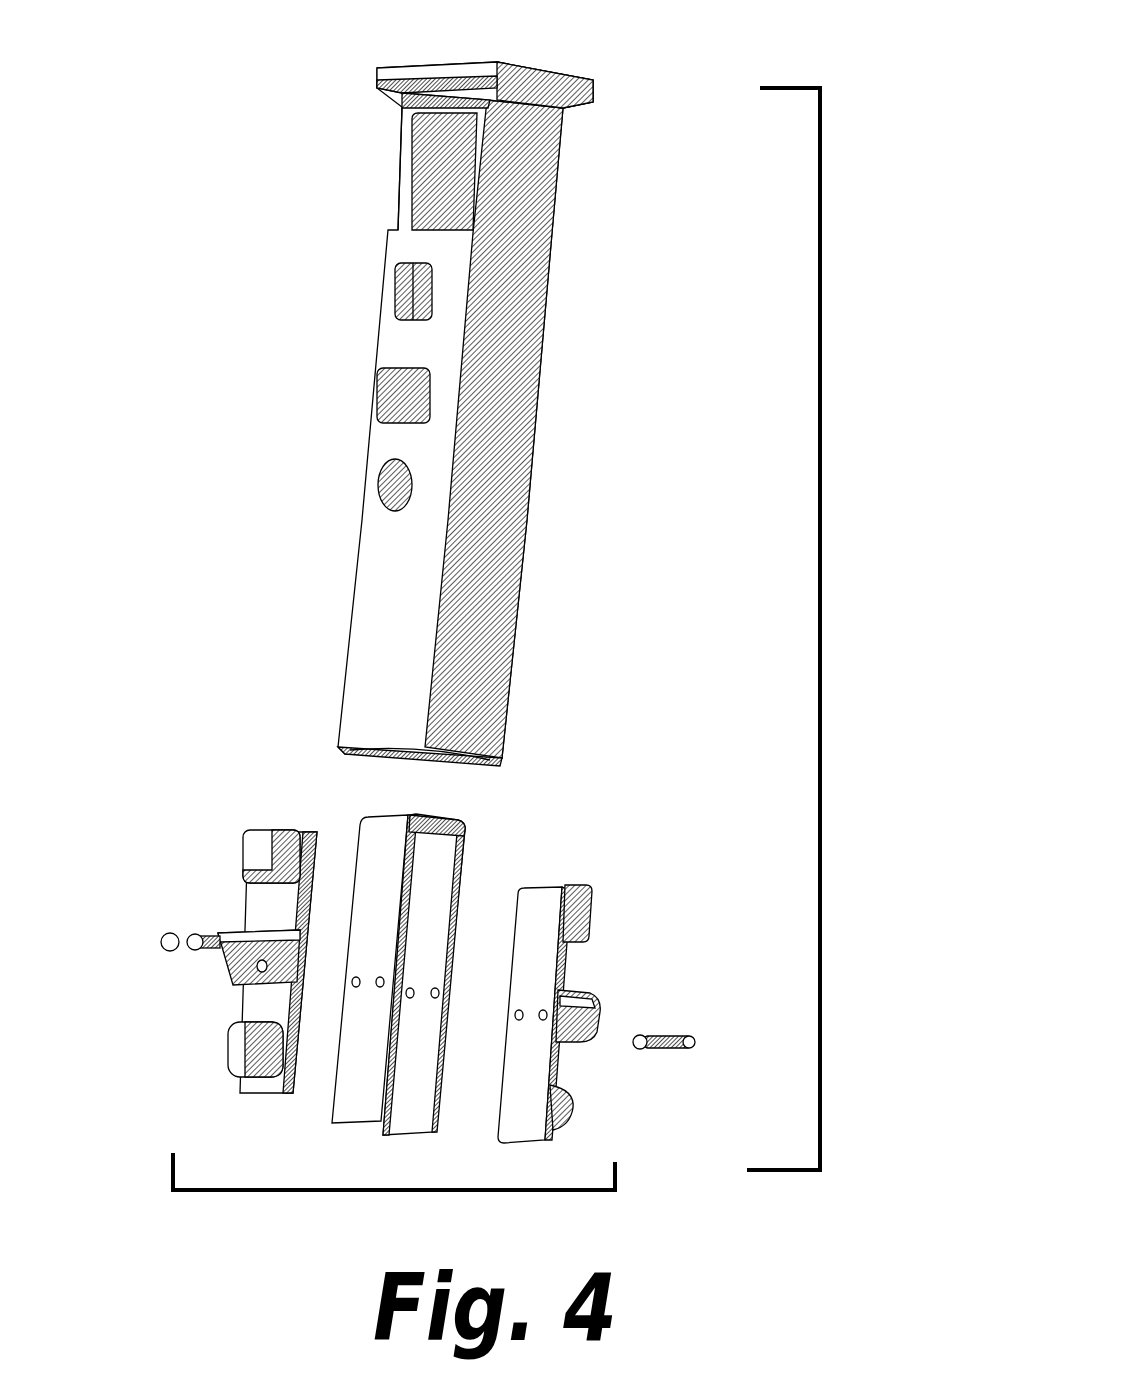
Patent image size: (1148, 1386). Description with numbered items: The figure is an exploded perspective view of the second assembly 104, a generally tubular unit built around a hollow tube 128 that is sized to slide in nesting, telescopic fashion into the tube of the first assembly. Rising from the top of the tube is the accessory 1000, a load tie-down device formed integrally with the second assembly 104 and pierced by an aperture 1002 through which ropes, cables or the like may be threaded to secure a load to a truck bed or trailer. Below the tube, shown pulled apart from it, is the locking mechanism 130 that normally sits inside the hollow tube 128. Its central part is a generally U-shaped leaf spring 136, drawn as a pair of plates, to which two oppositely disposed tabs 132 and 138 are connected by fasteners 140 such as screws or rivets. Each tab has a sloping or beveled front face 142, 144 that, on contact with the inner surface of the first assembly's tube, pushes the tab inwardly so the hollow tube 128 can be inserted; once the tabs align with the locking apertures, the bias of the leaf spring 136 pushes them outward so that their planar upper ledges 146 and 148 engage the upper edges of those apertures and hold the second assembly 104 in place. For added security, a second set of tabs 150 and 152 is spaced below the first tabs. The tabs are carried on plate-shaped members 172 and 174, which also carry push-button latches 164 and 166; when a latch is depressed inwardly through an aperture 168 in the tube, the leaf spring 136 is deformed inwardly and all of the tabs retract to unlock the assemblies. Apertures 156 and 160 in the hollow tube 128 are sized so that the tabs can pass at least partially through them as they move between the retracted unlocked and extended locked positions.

The accessory 1000 is at (380, 112).
The aperture 1002 is at (547, 78).
The second assembly 104 is at (835, 628).
The hollow tube 128 is at (510, 468).
The aperture 168 is at (410, 293).
The aperture 156 is at (400, 392).
The aperture 160 is at (383, 496).
The locking mechanism 130 is at (352, 1190).
The leaf spring 136 is at (452, 812).
The member 172 is at (290, 902).
The latch 164 is at (257, 838).
The upper ledge 146 is at (267, 923).
The tab 132 is at (237, 930).
The front face 142 is at (228, 972).
The fastener 140 is at (162, 943).
The tab 150 is at (238, 1058).
The member 174 is at (540, 952).
The latch 166 is at (582, 888).
The upper ledge 148 is at (572, 992).
The tab 138 is at (577, 993).
The front face 144 is at (577, 1003).
The tab 152 is at (570, 1105).